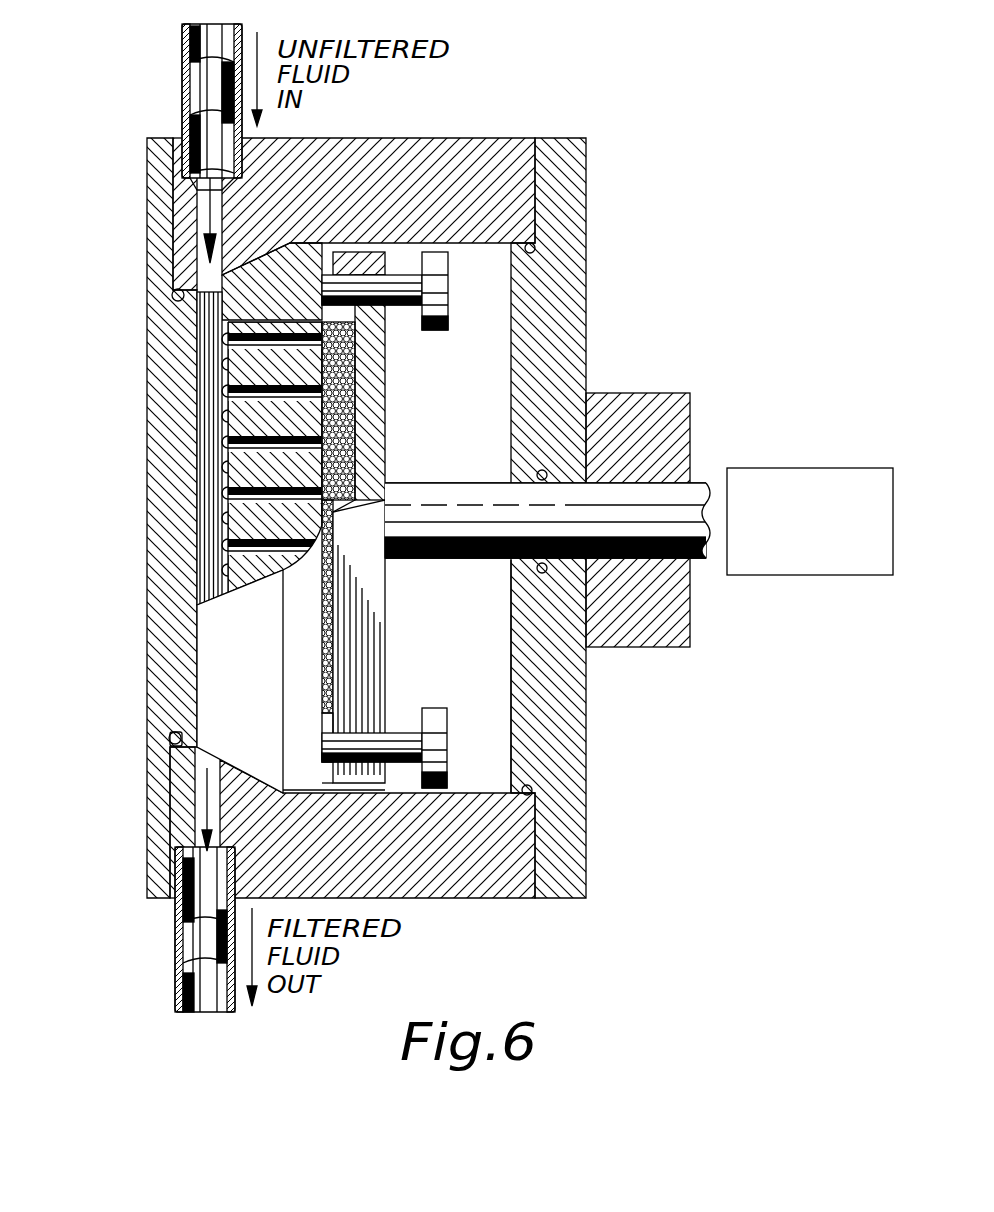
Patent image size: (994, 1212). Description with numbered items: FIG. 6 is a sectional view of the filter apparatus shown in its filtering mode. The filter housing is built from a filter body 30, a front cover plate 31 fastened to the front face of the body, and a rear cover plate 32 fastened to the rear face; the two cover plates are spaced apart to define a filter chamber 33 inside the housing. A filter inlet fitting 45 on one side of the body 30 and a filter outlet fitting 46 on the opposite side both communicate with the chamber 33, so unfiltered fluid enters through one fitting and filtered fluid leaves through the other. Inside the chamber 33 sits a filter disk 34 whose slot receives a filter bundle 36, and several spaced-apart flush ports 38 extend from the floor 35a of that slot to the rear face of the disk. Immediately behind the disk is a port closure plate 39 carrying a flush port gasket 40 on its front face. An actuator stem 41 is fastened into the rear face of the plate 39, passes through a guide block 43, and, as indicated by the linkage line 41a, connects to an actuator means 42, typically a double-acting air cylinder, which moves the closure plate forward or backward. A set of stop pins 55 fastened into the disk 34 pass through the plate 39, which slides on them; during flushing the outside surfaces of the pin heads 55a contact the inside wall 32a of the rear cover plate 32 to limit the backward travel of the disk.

The filter body 30 is at (399, 164).
The front cover plate 31 is at (118, 518).
The rear cover plate 32 is at (451, 829).
The inside wall 32a is at (459, 676).
The filter chamber 33 is at (587, 518).
The filter disk 34 is at (151, 681).
The floor of the slot 35a is at (180, 302).
The filter bundle 36 is at (120, 448).
The flush ports 38 is at (181, 463).
The port closure plate 39 is at (376, 521).
The flush port gasket 40 is at (406, 517).
The actuator stem 41 is at (545, 502).
The linkage line 41a is at (751, 472).
The actuator means 42 is at (810, 547).
The guide block 43 is at (676, 561).
The filter inlet fitting 45 is at (141, 141).
The filter outlet fitting 46 is at (140, 890).
The stop pins 55 is at (403, 518).
The pin heads 55a is at (567, 508).